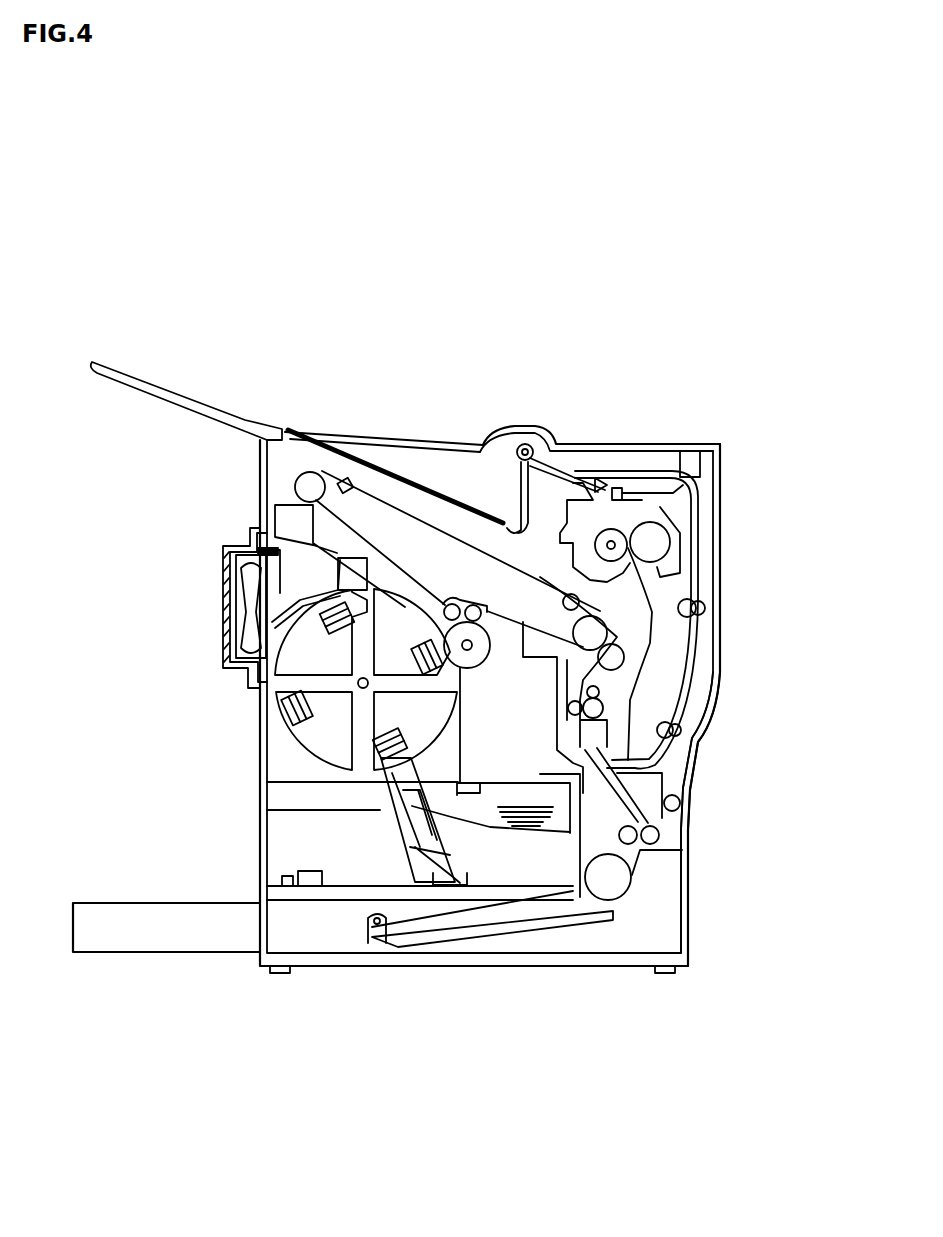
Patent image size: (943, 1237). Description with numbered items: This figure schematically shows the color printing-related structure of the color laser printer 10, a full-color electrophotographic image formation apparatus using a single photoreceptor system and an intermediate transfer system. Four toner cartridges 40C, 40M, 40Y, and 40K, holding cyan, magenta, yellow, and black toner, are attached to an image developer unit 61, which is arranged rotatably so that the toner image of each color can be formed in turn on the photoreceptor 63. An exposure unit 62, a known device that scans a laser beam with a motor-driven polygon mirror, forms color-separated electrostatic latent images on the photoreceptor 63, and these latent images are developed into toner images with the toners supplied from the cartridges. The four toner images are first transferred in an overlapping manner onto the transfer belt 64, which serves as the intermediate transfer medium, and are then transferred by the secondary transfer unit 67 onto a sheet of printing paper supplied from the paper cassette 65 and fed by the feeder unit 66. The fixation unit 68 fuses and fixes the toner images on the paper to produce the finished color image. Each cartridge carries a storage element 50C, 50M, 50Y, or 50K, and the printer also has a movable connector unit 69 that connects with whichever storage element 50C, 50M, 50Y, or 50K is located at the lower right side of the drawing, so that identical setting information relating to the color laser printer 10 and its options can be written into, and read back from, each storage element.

The color laser printer 10 is at (528, 370).
The black toner cartridge 40K is at (321, 632).
The cyan toner cartridge 40C is at (412, 632).
The yellow toner cartridge 40Y is at (314, 731).
The magenta toner cartridge 40M is at (415, 731).
The storage element of black toner cartridge 50K is at (322, 608).
The storage element of cyan toner cartridge 50C is at (423, 628).
The storage element of yellow toner cartridge 50Y is at (282, 707).
The storage element of magenta toner cartridge 50M is at (378, 748).
The image developer unit 61 is at (283, 733).
The exposure unit 62 is at (527, 841).
The photoreceptor 63 is at (495, 625).
The transfer belt 64 is at (338, 474).
The paper cassette 65 is at (128, 903).
The feeder unit 66 is at (716, 778).
The secondary transfer unit 67 is at (626, 647).
The fixation unit 68 is at (722, 522).
The movable connector unit 69 is at (385, 829).